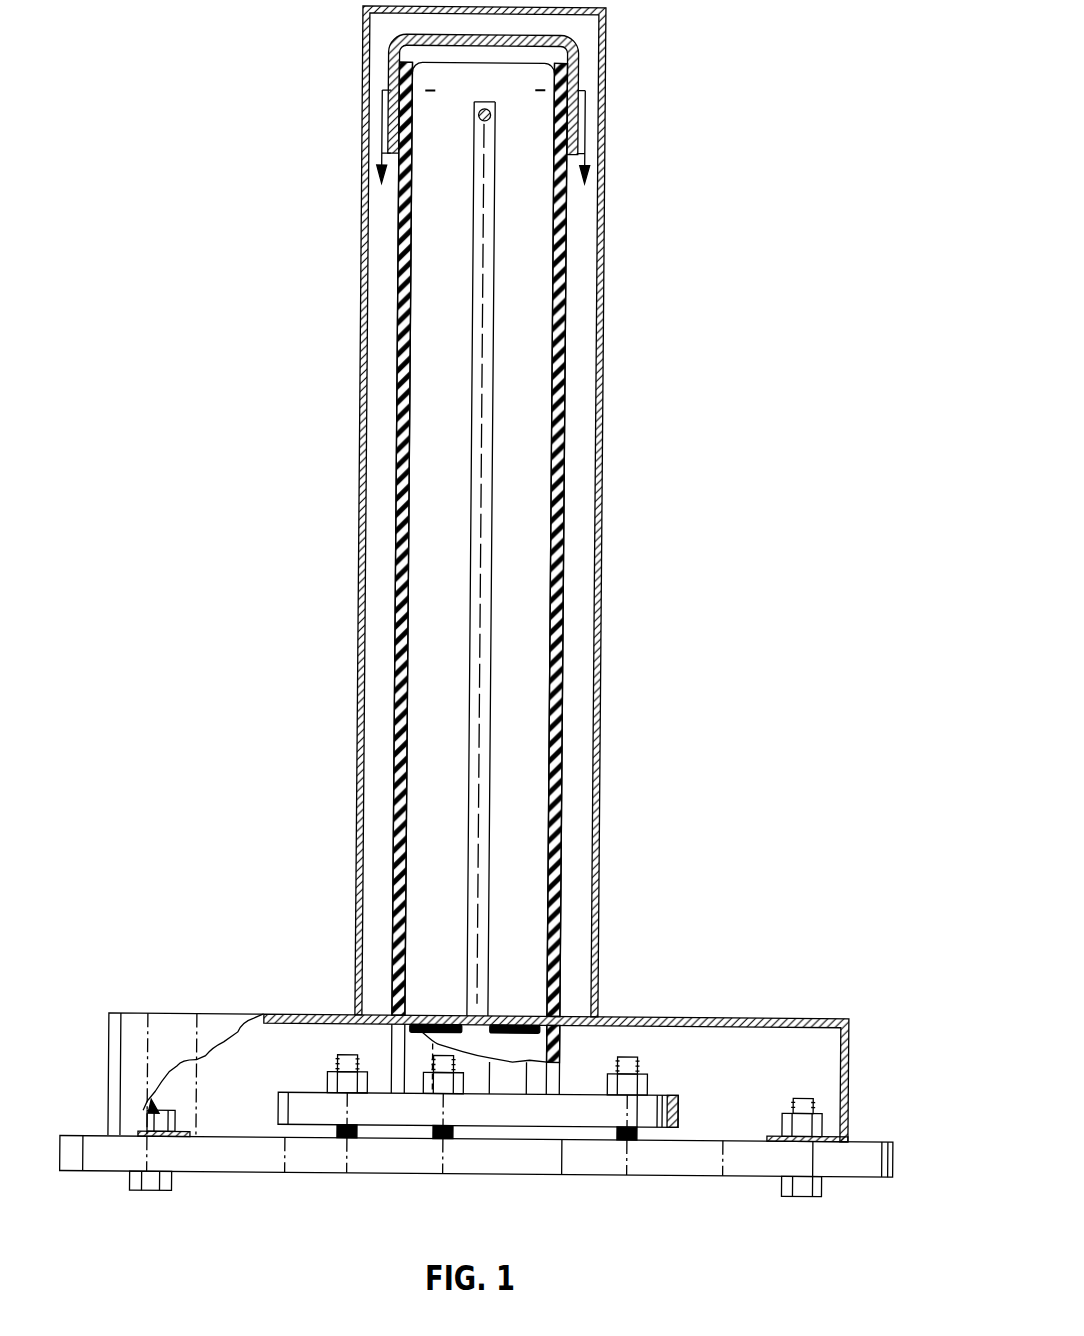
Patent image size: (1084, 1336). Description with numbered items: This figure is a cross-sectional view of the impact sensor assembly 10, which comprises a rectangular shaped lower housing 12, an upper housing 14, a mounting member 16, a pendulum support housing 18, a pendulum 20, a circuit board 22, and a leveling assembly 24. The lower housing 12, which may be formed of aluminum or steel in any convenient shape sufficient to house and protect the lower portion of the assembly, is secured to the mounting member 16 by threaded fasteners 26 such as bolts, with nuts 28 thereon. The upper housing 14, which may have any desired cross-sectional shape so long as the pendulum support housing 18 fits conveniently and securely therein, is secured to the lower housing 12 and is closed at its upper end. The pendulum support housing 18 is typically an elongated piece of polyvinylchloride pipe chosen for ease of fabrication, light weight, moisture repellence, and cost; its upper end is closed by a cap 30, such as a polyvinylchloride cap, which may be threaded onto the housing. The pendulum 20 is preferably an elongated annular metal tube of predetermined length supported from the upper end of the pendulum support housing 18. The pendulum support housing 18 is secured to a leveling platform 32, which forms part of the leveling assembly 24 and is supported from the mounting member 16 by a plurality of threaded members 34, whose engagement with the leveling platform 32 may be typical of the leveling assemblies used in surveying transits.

The impact sensor assembly 10 is at (655, 658).
The rectangular shaped lower housing 12 is at (782, 1017).
The upper housing 14 is at (605, 487).
The mounting member 16 is at (842, 1162).
The pendulum support housing 18 is at (532, 270).
The pendulum 20 is at (483, 370).
The circuit board 22 is at (510, 1015).
The leveling assembly 24 is at (587, 1070).
The threaded fasteners 26 is at (812, 1105).
The nuts 28 is at (833, 1122).
The cap 30 is at (578, 78).
The leveling platform 32 is at (662, 1097).
The threaded members 34 is at (347, 1138).